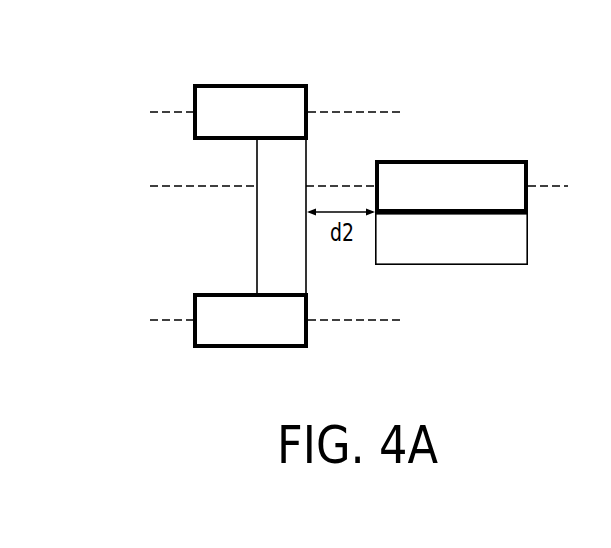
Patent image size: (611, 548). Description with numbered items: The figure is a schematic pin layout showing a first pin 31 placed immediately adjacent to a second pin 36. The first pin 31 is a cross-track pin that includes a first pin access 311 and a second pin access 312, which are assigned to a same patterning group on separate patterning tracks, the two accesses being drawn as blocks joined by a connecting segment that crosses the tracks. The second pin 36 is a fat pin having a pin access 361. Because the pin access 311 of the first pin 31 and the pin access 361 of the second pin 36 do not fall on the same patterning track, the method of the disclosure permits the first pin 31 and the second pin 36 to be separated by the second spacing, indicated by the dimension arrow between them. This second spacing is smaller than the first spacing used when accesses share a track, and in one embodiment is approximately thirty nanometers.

The first pin 31 is at (284, 187).
The first pin access 311 is at (272, 123).
The second pin access 312 is at (271, 333).
The second pin 36 is at (486, 184).
The pin access 361 is at (472, 198).